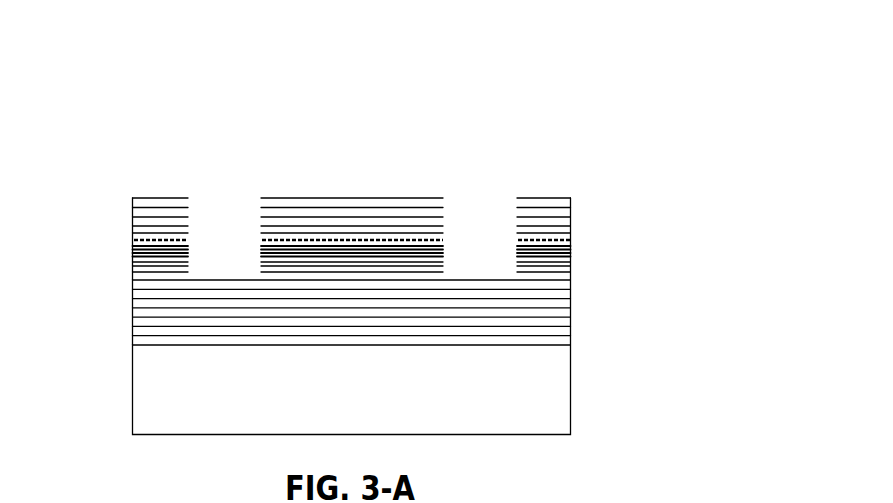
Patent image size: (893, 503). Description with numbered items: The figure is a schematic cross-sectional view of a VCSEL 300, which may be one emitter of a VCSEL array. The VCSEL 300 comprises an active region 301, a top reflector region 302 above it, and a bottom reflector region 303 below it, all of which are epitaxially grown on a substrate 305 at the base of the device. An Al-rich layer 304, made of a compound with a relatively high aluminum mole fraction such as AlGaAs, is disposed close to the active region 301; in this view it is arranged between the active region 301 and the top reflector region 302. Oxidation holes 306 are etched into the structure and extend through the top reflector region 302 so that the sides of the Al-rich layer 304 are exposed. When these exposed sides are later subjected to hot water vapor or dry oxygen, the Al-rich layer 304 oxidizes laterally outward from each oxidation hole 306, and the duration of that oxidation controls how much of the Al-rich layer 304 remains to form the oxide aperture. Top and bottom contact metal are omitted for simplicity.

The VCSEL 300 is at (610, 73).
The active region 301 is at (571, 252).
The top reflector region 302 is at (571, 218).
The bottom reflector region 303 is at (571, 283).
The Al-rich layer 304 is at (132, 240).
The substrate 305 is at (553, 365).
The oxidation holes 306 is at (215, 218).